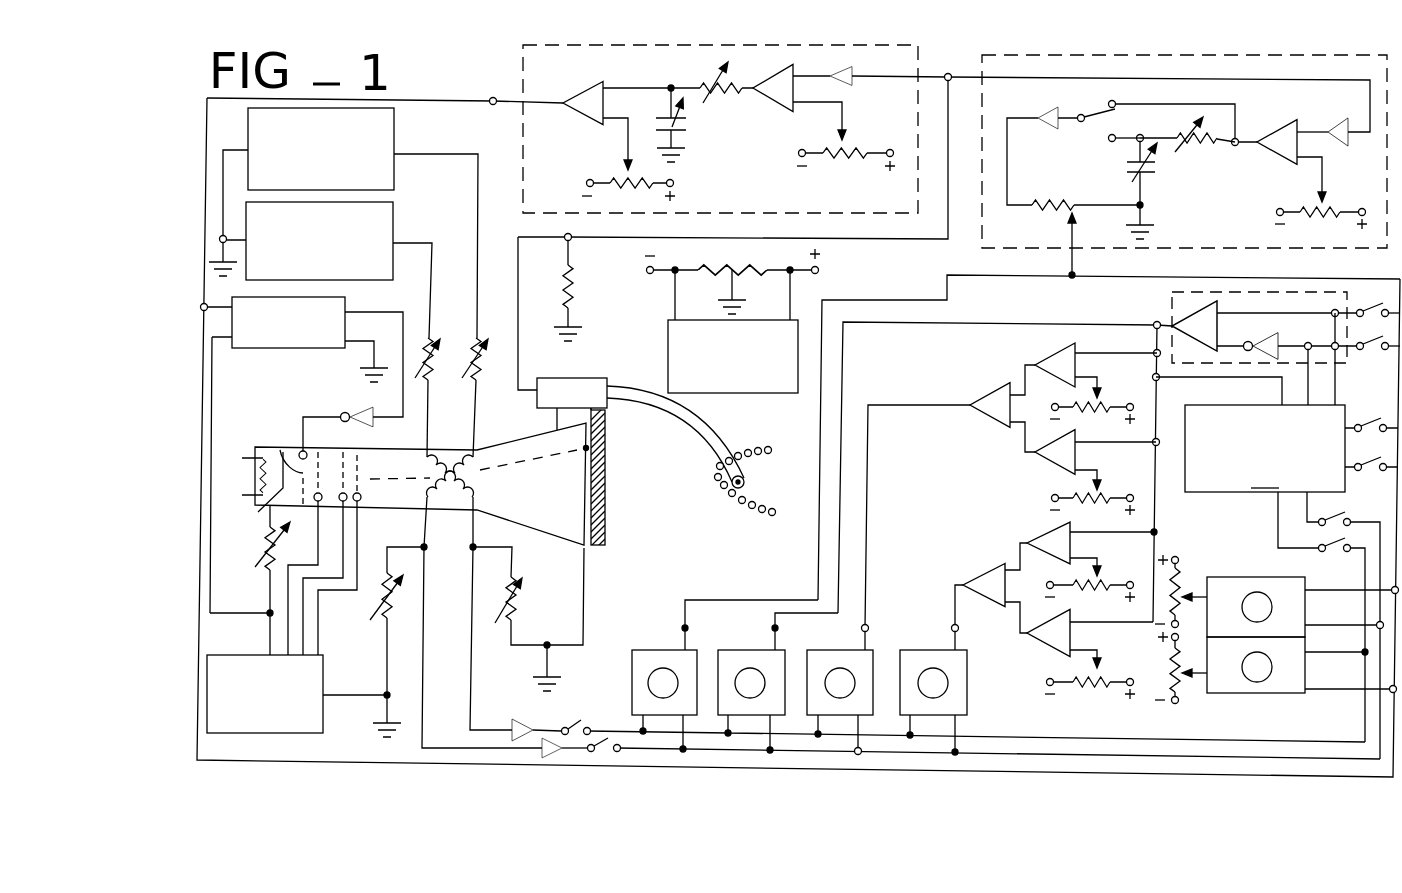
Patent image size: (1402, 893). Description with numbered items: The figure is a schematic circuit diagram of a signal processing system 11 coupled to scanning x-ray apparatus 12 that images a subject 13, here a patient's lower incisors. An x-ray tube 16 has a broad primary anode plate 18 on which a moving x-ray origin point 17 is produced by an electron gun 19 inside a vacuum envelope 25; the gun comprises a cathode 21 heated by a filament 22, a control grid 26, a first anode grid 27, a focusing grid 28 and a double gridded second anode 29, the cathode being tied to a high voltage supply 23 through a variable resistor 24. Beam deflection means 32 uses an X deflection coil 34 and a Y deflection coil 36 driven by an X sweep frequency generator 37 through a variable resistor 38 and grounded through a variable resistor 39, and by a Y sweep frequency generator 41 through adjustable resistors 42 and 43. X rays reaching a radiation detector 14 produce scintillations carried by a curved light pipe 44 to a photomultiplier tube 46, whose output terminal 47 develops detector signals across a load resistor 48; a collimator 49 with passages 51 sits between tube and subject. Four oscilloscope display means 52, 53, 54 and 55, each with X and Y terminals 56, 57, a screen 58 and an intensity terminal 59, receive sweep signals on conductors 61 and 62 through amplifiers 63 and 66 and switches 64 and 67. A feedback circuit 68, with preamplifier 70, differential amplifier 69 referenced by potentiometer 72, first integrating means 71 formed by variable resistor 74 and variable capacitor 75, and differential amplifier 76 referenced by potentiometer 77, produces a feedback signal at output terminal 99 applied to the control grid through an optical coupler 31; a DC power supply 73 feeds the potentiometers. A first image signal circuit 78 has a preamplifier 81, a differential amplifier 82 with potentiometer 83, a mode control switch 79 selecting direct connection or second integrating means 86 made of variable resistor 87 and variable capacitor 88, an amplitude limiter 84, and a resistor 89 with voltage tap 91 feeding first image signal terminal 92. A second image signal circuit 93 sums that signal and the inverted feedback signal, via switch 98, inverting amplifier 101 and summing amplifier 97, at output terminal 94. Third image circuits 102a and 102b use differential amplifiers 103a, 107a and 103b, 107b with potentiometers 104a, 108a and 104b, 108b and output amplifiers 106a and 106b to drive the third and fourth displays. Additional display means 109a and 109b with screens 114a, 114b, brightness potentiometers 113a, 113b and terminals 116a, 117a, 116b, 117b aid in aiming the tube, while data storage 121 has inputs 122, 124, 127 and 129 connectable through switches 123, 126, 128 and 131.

The signal processing system 11 is at (803, 419).
The scanning x-ray apparatus 12 is at (626, 541).
The subject 13 is at (711, 476).
The radiation detector 14 is at (748, 483).
The x-ray tube 16 is at (520, 434).
The moving x-ray origin point 17 is at (590, 448).
The primary anode plate 18 is at (583, 520).
The electron gun 19 is at (255, 432).
The cathode 21 is at (272, 500).
The filament 22 is at (258, 475).
The high voltage supply 23 is at (325, 712).
The variable resistor 24 is at (251, 580).
The vacuum envelope 25 is at (582, 548).
The control grid 26 is at (300, 450).
The first electron gun anode grid 27 is at (322, 457).
The focusing grid 28 is at (360, 500).
The second electron gun anode 29 is at (370, 488).
The optical coupler 31 is at (287, 348).
The beam deflection means 32 is at (494, 490).
The X deflection coil 34 is at (455, 507).
The Y deflection coil 36 is at (462, 458).
The X sweep frequency generator 37 is at (393, 215).
The variable resistor 38 is at (438, 379).
The variable resistor 39 is at (518, 608).
The Y sweep frequency generator 41 is at (394, 127).
The adjustable resistor 42 is at (486, 379).
The adjustable resistor 43 is at (373, 642).
The light pipe 44 is at (710, 428).
The photomultiplier tube 46 is at (570, 378).
The output terminal 47 is at (563, 234).
The load resistor 48 is at (590, 295).
The focussing collimator 49 is at (606, 471).
The radiation transmissive passages 51 is at (604, 502).
The first display means 52 is at (632, 678).
The second display means 53 is at (732, 650).
The third display means 54 is at (867, 650).
The fourth display means 55 is at (967, 698).
The X sweep frequency terminal 56 is at (640, 728).
The Y sweep frequency terminal 57 is at (681, 758).
The screen 58 is at (658, 672).
The Z or beam intensity terminal 59 is at (683, 625).
The X sweep frequency conductor 61 is at (1056, 738).
The Y sweep frequency conductor 62 is at (1110, 752).
The amplifier 63 is at (512, 722).
The switch 64 is at (568, 722).
The amplifier 66 is at (547, 760).
The switch 67 is at (600, 758).
The feedback circuit 68 is at (520, 63).
The differential amplifier 69 is at (775, 108).
The preamplifier 70 is at (845, 87).
The first signal integrating means 71 is at (662, 74).
The potentiometer 72 is at (846, 164).
The DC power supply 73 is at (668, 335).
The variable resistor 74 is at (711, 75).
The variable capacitor 75 is at (690, 125).
The differential amplifier 76 is at (585, 85).
The potentiometer 77 is at (625, 177).
The first image signal circuit 78 is at (982, 65).
The mode control switch 79 is at (1100, 112).
The adjustable gain preamplifier 81 is at (1343, 118).
The differential amplifier 82 is at (1285, 130).
The potentiometer 83 is at (1335, 205).
The adjustable signal amplitude limiter 84 is at (1052, 110).
The second adjustable time constant integrating means 86 is at (1118, 151).
The variable resistor 87 is at (1187, 148).
The variable capacitor 88 is at (1160, 167).
The resistor 89 is at (1060, 210).
The adjustable voltage tap 91 is at (1075, 232).
The first image signal terminal 92 is at (1068, 279).
The second image signal circuit 93 is at (1170, 291).
The output terminal 94 is at (1150, 322).
The summing amplifier 97 is at (1264, 326).
The switch 98 is at (1365, 305).
The output terminal 99 is at (490, 99).
The inverting amplifier 101 is at (1284, 359).
The third image signal circuit 102a is at (986, 366).
The third image signal circuit 102b is at (986, 547).
The first differential amplifier 103a is at (1058, 352).
The first differential amplifier 103b is at (1045, 535).
The potentiometer 104a is at (1107, 400).
The lower signal amplitude limit selector potentiometer 104b is at (1105, 578).
The output differential amplifier 106a is at (987, 397).
The output differential amplifier 106b is at (977, 578).
The second differential amplifier 107a is at (1055, 467).
The second differential amplifier 107b is at (1050, 647).
The potentiometer 108a is at (1107, 492).
The upper signal amplitude selector potentiometer 108b is at (1105, 676).
The display means 109a is at (1235, 585).
The display means 109b is at (1265, 687).
The potentiometer 113a is at (1182, 555).
The potentiometer 113b is at (1167, 673).
The screen 114a is at (1255, 600).
The screen 114b is at (1252, 673).
The Y sweep frequency terminal 116a is at (1377, 624).
The Y sweep frequency terminal 116b is at (1388, 688).
The X sweep frequency terminal 117a is at (1390, 589).
The X sweep frequency terminal 117b is at (1363, 651).
The data storage 121 is at (1265, 448).
The first image signal input 122 is at (1370, 366).
The switch 123 is at (1371, 414).
The feedback signal input 124 is at (1371, 452).
The switch 126 is at (1376, 483).
The X sweep frequency signal input 127 is at (1316, 550).
The switch 128 is at (1318, 537).
The Y sweep frequency signal input 129 is at (1318, 522).
The switch 131 is at (1337, 513).